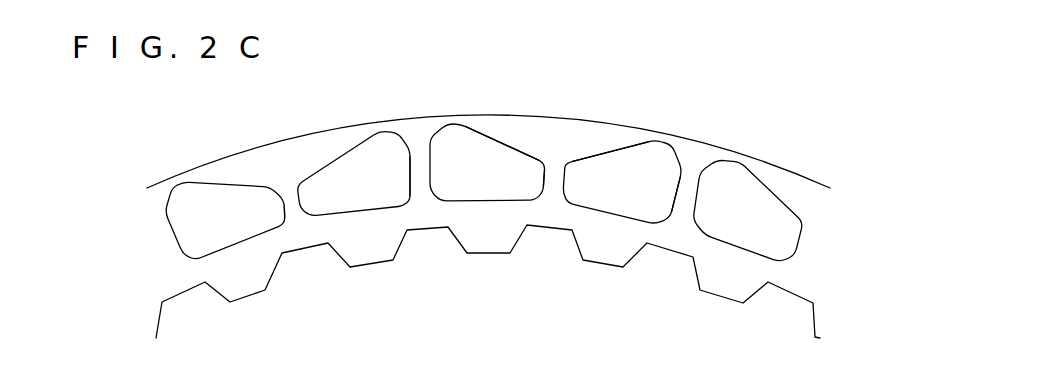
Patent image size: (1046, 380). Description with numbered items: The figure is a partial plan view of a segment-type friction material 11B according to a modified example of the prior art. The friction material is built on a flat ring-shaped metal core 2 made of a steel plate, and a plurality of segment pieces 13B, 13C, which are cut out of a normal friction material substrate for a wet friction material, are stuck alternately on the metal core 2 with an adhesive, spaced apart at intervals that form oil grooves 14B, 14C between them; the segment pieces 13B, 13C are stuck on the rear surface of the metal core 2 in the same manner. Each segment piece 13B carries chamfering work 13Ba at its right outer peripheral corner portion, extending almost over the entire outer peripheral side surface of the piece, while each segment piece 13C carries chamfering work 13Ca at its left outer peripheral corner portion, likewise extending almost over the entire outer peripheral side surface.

The metal core 2 is at (503, 240).
The segment-type friction material 11B is at (383, 110).
The segment piece 13B is at (203, 198).
The segment piece 13C is at (347, 168).
The chamfering work 13Ba is at (515, 148).
The chamfering work 13Ca is at (607, 150).
The oil groove 14B is at (293, 202).
The oil groove 14C is at (421, 175).